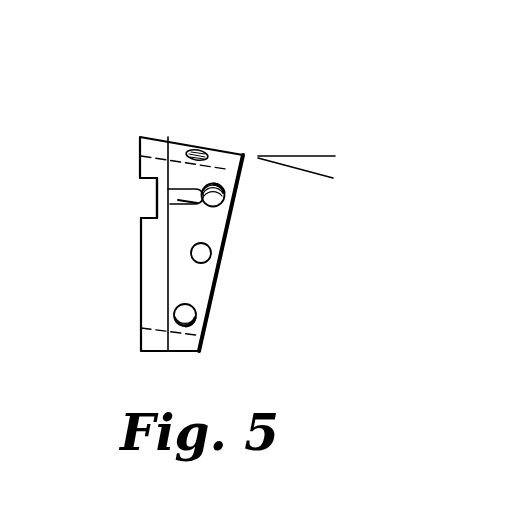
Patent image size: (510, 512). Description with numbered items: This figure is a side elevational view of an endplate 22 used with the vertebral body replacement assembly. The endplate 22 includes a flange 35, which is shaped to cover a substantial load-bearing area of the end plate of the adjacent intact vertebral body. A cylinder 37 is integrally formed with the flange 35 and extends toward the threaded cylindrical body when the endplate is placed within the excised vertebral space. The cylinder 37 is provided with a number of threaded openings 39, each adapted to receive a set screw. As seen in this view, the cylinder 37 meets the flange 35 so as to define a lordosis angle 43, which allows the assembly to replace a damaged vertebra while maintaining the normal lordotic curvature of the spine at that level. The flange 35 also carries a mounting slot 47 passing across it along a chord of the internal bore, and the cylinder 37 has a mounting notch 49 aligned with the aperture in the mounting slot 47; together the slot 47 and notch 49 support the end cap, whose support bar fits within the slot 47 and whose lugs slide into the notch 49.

The endplate 22 is at (165, 113).
The flange 35 is at (141, 278).
The cylinder 37 is at (196, 150).
The threaded openings 39 is at (215, 184).
The lordosis angle 43 is at (300, 203).
The mounting slot 47 is at (157, 203).
The mounting notch 49 is at (196, 216).